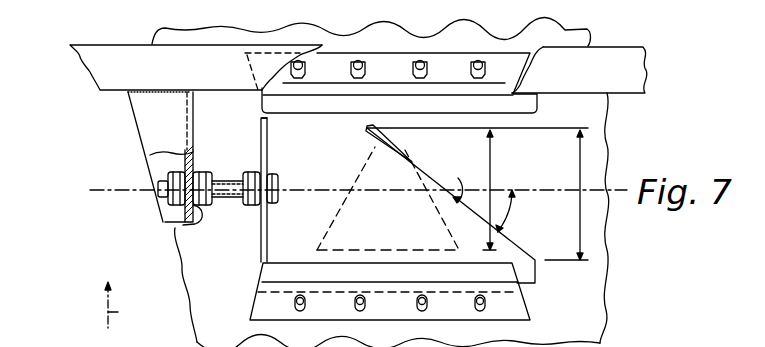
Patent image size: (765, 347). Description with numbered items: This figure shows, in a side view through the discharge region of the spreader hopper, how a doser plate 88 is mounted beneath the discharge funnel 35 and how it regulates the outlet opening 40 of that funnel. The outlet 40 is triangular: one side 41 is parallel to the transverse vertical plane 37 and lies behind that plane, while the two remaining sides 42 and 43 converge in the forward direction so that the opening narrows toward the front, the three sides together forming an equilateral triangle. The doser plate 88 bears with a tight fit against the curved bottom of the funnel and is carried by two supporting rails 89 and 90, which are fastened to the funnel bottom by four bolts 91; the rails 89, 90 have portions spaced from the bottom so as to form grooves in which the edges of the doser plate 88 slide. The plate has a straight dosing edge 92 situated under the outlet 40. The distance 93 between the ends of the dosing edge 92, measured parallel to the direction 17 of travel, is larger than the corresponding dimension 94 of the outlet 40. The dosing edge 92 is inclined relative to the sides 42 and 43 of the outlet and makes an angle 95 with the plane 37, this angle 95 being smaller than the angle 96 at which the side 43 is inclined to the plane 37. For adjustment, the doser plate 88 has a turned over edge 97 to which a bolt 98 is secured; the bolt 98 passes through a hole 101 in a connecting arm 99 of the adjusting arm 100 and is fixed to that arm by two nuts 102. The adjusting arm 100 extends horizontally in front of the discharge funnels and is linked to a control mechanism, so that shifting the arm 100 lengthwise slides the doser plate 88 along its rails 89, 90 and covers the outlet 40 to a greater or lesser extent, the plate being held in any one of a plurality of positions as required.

The direction 17 is at (129, 305).
The discharge funnel 35 is at (574, 322).
The transverse vertical plane 37 is at (100, 191).
The outlet opening 40 is at (387, 216).
The side of the triangle 41 is at (384, 259).
The side of the outlet 42 is at (336, 213).
The side of the outlet 43 is at (441, 214).
The doser plate 88 is at (323, 155).
The supporting rail 89 is at (450, 90).
The supporting rail 90 is at (251, 312).
The bolt 91 is at (362, 61).
The dosing edge 92 is at (520, 248).
The distance 93 is at (590, 232).
The dimension 94 is at (494, 156).
The angle 95 is at (517, 209).
The angle 96 is at (465, 182).
The turned over edge 97 is at (262, 255).
The bolt 98 is at (226, 199).
The connecting arm 99 is at (146, 136).
The adjusting arm 100 is at (119, 45).
The hole 101 is at (194, 161).
The nut 102 is at (175, 226).